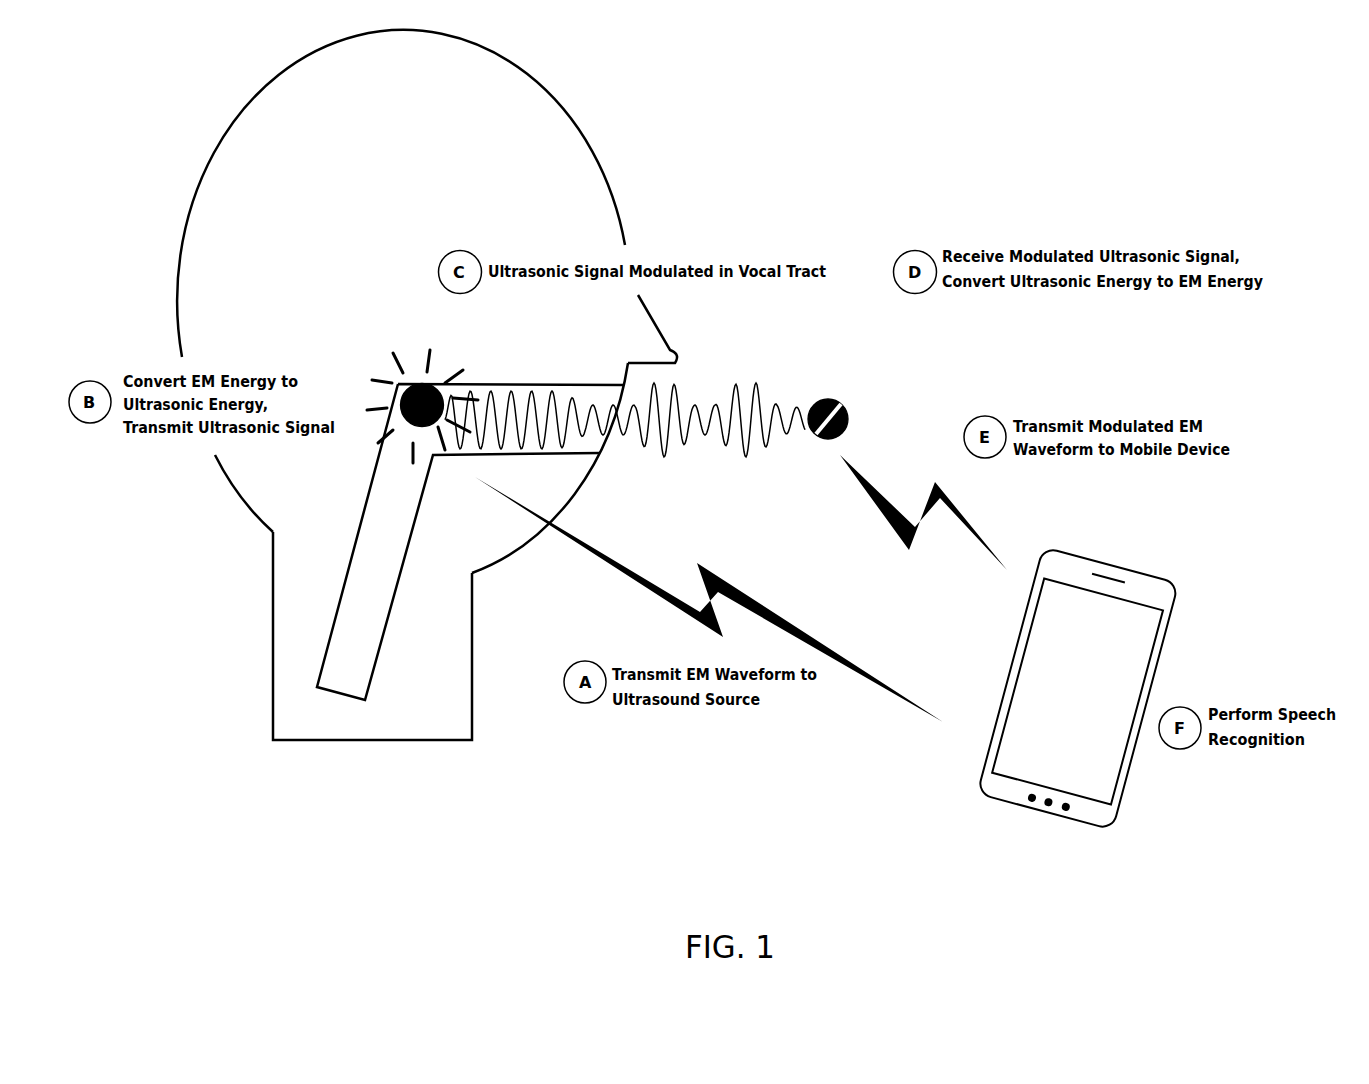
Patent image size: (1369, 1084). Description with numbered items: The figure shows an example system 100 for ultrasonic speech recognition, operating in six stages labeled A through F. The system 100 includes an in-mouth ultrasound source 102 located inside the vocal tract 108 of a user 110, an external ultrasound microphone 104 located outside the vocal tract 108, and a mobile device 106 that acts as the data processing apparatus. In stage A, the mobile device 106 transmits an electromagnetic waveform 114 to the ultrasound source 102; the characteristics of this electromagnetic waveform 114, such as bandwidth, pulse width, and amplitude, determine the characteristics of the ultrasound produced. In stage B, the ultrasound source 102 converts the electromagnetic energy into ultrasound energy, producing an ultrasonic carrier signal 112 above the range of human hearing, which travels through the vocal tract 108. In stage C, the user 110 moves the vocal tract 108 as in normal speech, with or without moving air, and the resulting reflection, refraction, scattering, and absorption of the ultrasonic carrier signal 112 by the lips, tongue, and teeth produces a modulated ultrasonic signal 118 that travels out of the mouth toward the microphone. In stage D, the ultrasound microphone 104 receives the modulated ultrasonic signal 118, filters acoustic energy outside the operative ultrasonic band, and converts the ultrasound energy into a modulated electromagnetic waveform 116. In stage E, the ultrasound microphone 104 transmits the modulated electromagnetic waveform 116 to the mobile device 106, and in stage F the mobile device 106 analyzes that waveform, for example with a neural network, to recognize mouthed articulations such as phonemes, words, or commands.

The system 100 is at (1060, 155).
The ultrasound source 102 is at (395, 385).
The ultrasound microphone 104 is at (848, 413).
The mobile device 106 is at (1137, 753).
The vocal tract 108 is at (565, 454).
The user 110 is at (243, 127).
The ultrasonic carrier signal 112 is at (522, 398).
The electromagnetic waveform 114 is at (740, 588).
The modulated electromagnetic waveform 116 is at (977, 550).
The modulated ultrasonic signal 118 is at (758, 390).